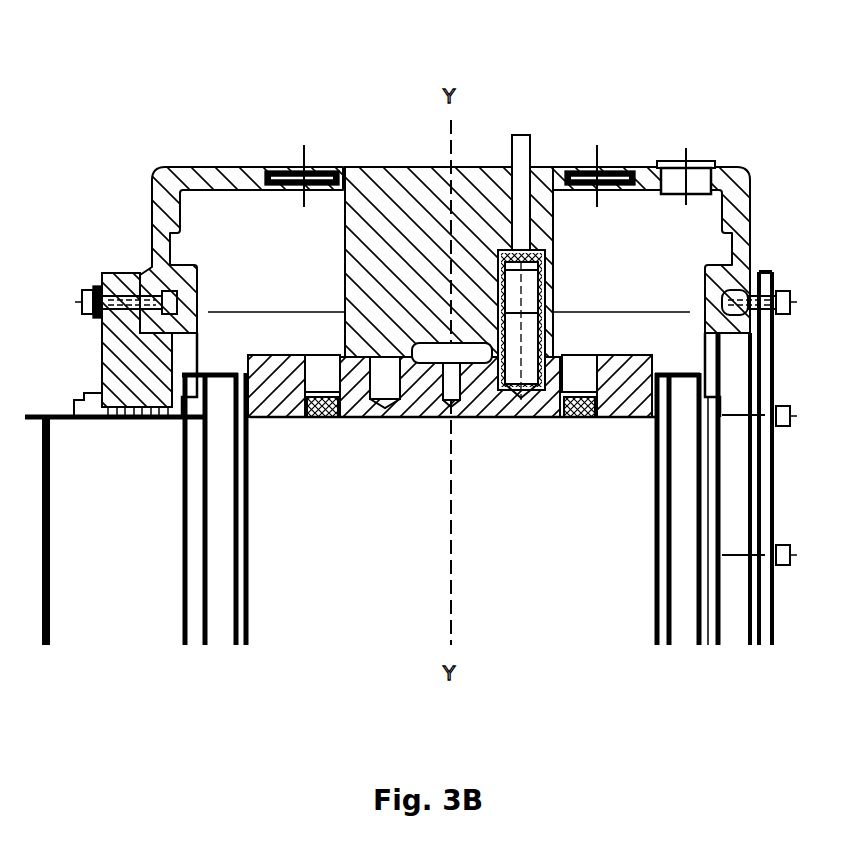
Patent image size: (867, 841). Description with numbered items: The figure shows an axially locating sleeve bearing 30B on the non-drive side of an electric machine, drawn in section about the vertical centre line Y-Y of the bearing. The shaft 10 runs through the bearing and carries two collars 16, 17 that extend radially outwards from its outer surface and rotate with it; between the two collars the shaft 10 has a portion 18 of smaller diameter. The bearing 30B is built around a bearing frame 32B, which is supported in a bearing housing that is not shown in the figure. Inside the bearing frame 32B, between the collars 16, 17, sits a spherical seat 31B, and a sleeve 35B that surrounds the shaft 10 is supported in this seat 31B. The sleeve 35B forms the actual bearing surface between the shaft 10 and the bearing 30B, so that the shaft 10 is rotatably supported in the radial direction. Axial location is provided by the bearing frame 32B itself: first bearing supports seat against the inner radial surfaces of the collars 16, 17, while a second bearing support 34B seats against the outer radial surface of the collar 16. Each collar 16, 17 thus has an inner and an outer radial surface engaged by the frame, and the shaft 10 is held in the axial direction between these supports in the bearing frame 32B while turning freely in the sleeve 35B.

The axially locating sleeve bearing 30B is at (150, 103).
The bearing frame 32B is at (373, 190).
The spherical seat 31B is at (413, 378).
The sleeve 35B is at (512, 410).
The portion with a smaller diameter 18 is at (387, 405).
The second bearing support 34B is at (120, 420).
The collar 16 is at (208, 395).
The collar 17 is at (668, 383).
The shaft 10 is at (130, 578).